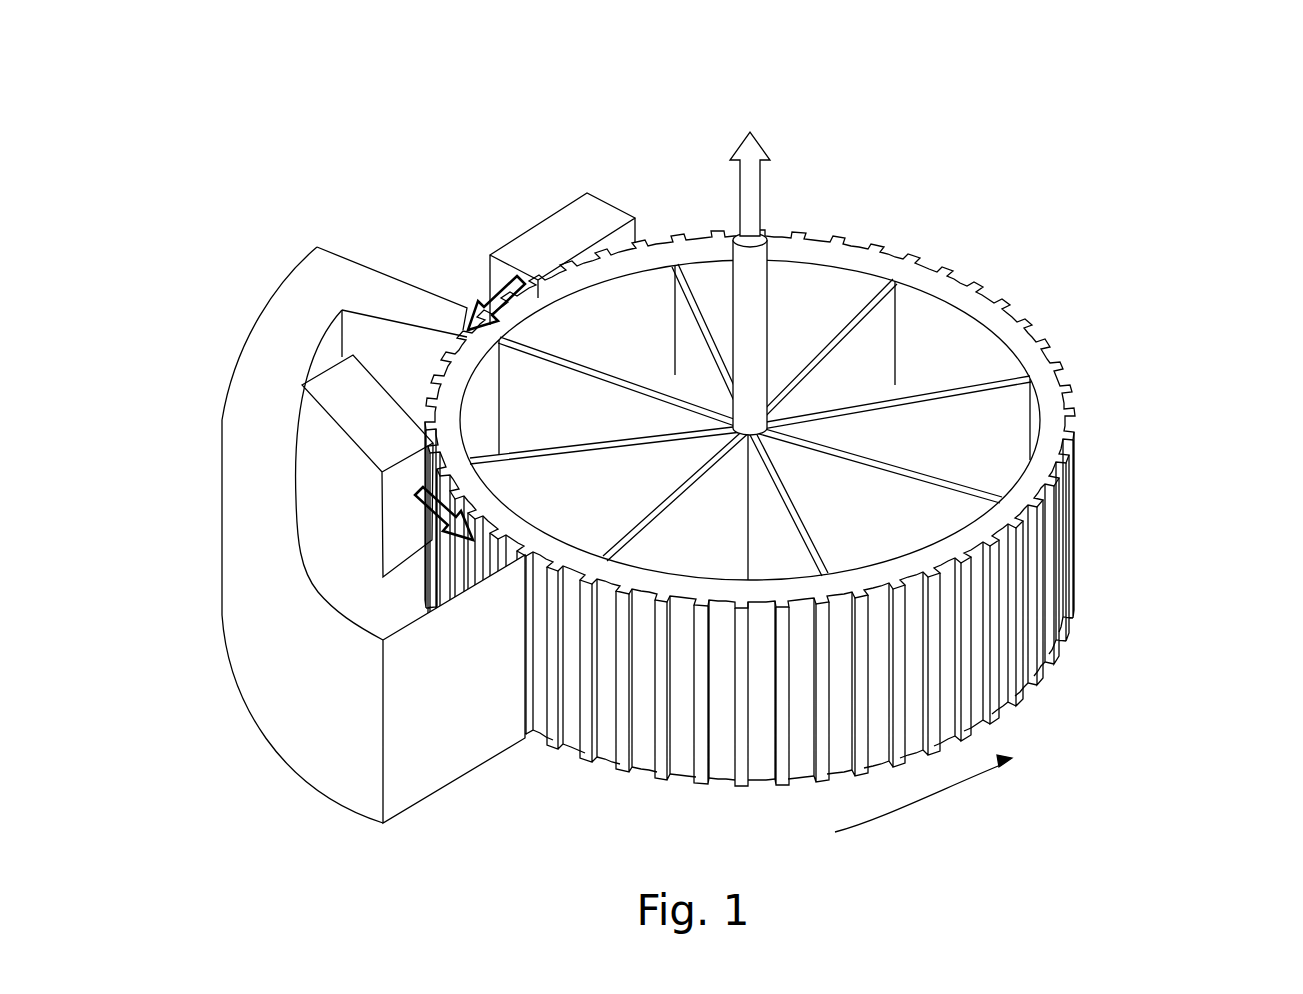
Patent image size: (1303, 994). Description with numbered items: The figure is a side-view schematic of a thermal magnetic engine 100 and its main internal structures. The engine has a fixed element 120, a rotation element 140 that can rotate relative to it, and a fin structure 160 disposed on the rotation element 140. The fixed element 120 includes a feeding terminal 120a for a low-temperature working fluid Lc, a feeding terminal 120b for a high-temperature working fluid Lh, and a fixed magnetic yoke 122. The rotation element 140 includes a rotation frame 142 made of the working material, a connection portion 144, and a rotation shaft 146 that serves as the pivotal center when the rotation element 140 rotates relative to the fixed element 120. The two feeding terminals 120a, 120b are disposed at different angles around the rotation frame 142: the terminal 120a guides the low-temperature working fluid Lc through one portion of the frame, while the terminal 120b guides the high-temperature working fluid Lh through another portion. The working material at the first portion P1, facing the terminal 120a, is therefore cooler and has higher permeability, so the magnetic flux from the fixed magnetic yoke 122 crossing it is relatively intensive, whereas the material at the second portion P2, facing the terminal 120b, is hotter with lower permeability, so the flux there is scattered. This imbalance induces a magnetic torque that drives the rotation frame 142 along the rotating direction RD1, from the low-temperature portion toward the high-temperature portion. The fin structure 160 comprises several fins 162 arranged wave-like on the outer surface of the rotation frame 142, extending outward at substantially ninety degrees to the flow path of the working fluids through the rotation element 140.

The thermal magnetic engine 100 is at (593, 133).
The fixed element 120 is at (416, 460).
The feeding terminal of a low-temperature working fluid 120a is at (557, 240).
The feeding terminal of a high-temperature working fluid 120b is at (332, 387).
The fixed magnetic yoke 122 is at (347, 285).
The rotation element 140 is at (859, 443).
The rotation frame 142 is at (953, 293).
The connection portion 144 is at (847, 317).
The rotation shaft 146 is at (786, 283).
The fin structure 160 is at (859, 604).
The fins 162 is at (1060, 450).
The low-temperature working fluid Lc is at (483, 307).
The high-temperature working fluid Lh is at (413, 498).
The first portion P1 is at (482, 338).
The second portion P2 is at (497, 512).
The rotating direction RD1 is at (958, 808).